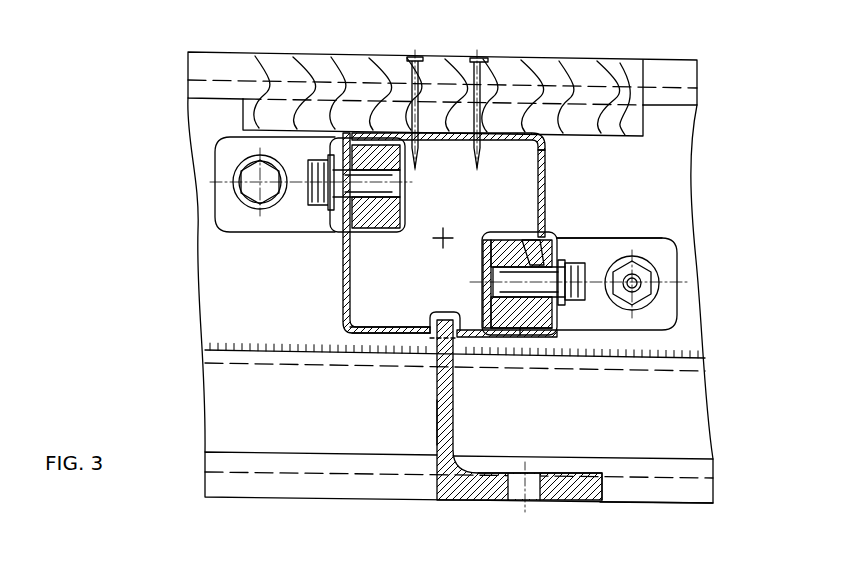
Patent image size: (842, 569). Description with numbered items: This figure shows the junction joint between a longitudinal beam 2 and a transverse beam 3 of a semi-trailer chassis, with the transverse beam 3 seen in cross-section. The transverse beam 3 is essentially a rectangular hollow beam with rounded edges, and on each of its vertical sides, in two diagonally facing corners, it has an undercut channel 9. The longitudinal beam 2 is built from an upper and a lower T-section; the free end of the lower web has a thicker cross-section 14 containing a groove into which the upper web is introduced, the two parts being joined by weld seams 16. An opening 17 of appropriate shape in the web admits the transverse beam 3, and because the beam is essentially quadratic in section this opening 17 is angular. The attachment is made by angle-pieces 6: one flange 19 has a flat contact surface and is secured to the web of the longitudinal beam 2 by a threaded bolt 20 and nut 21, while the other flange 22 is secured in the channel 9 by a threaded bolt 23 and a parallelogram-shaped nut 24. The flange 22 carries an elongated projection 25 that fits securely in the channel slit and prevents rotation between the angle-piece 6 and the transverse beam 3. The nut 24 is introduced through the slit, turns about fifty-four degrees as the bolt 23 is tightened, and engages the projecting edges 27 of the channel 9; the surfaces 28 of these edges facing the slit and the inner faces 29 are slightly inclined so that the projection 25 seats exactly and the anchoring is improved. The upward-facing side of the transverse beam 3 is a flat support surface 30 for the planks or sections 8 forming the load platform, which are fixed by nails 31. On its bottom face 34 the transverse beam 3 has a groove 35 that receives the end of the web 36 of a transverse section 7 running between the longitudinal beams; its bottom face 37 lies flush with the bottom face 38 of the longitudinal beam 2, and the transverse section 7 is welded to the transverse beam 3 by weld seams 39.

The longitudinal beam 2 is at (642, 48).
The transverse beam 3 is at (469, 263).
The angle-piece 6 is at (268, 236).
The transverse section 7 is at (482, 429).
The planks or sections 8 is at (552, 78).
The undercut channel 9 is at (458, 267).
The thicker cross-section 14 is at (288, 358).
The weld seams 16 is at (236, 350).
The opening 17 is at (548, 183).
The flange 19 is at (594, 252).
The threaded bolt 20 is at (636, 286).
The nut 21 is at (648, 268).
The flange 22 is at (556, 321).
The threaded bolt 23 is at (573, 288).
The parallelogram-shaped nut 24 is at (508, 312).
The elongated projection 25 is at (540, 253).
The projecting edges 27 is at (540, 314).
The surfaces 28 is at (346, 228).
The inner faces 29 is at (362, 229).
The support surface 30 is at (448, 152).
The nails 31 is at (482, 57).
The bottom face 34 is at (372, 334).
The groove 35 is at (441, 312).
The web 36 is at (437, 421).
The bottom face 37 is at (558, 490).
The bottom face 38 is at (630, 502).
The weld seams 39 is at (428, 339).